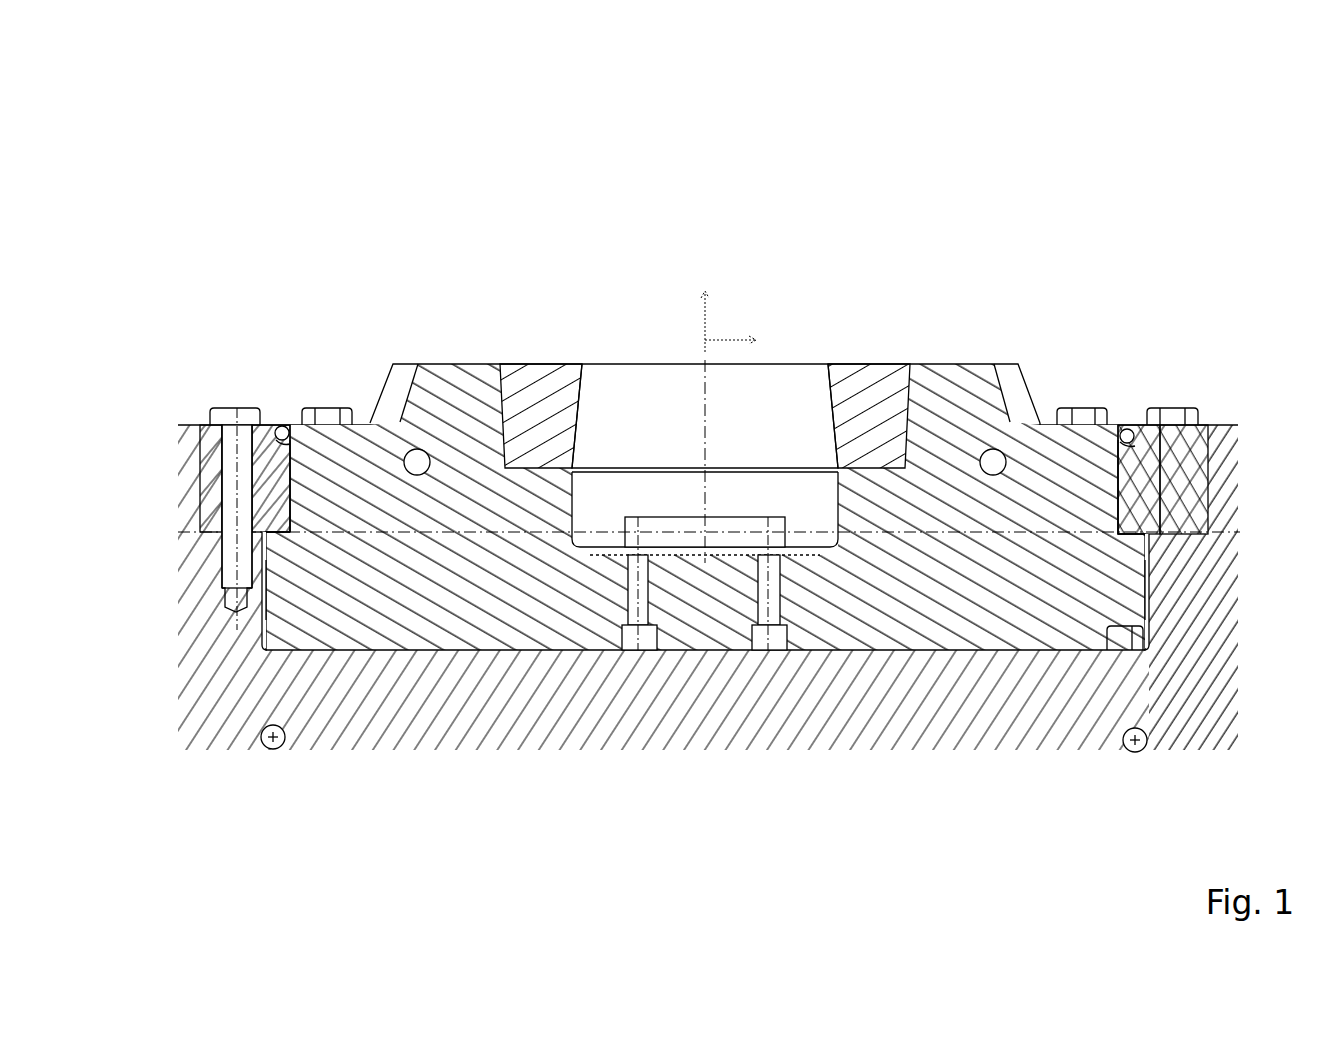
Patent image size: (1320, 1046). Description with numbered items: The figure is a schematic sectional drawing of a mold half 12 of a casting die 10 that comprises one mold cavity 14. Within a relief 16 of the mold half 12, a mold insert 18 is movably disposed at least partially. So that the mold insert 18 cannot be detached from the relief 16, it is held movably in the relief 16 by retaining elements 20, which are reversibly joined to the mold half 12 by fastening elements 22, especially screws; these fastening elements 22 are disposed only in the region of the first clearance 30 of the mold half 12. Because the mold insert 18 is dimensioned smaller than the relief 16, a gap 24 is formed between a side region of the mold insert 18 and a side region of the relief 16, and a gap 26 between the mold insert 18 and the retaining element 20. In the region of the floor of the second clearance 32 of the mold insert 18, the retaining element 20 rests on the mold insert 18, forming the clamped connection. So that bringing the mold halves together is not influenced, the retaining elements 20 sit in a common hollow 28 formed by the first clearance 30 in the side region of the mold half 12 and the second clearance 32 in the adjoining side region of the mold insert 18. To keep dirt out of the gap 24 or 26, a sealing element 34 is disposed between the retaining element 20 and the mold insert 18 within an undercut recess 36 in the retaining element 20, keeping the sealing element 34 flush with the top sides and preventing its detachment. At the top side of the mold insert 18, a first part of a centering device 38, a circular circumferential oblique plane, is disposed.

The casting die 10 is at (724, 262).
The mold half 12 is at (705, 712).
The mold cavity 14 is at (909, 338).
The relief 16 is at (265, 652).
The mold insert 18 is at (820, 633).
The retaining element 20 is at (265, 430).
The fastening element 22 is at (237, 428).
The gap 24 is at (270, 590).
The gap 26 is at (293, 483).
The common hollow 28 is at (199, 423).
The first clearance 30 is at (198, 535).
The second clearance 32 is at (298, 537).
The sealing element 34 is at (283, 426).
The recess 36 is at (273, 447).
The centering device 38 is at (403, 397).